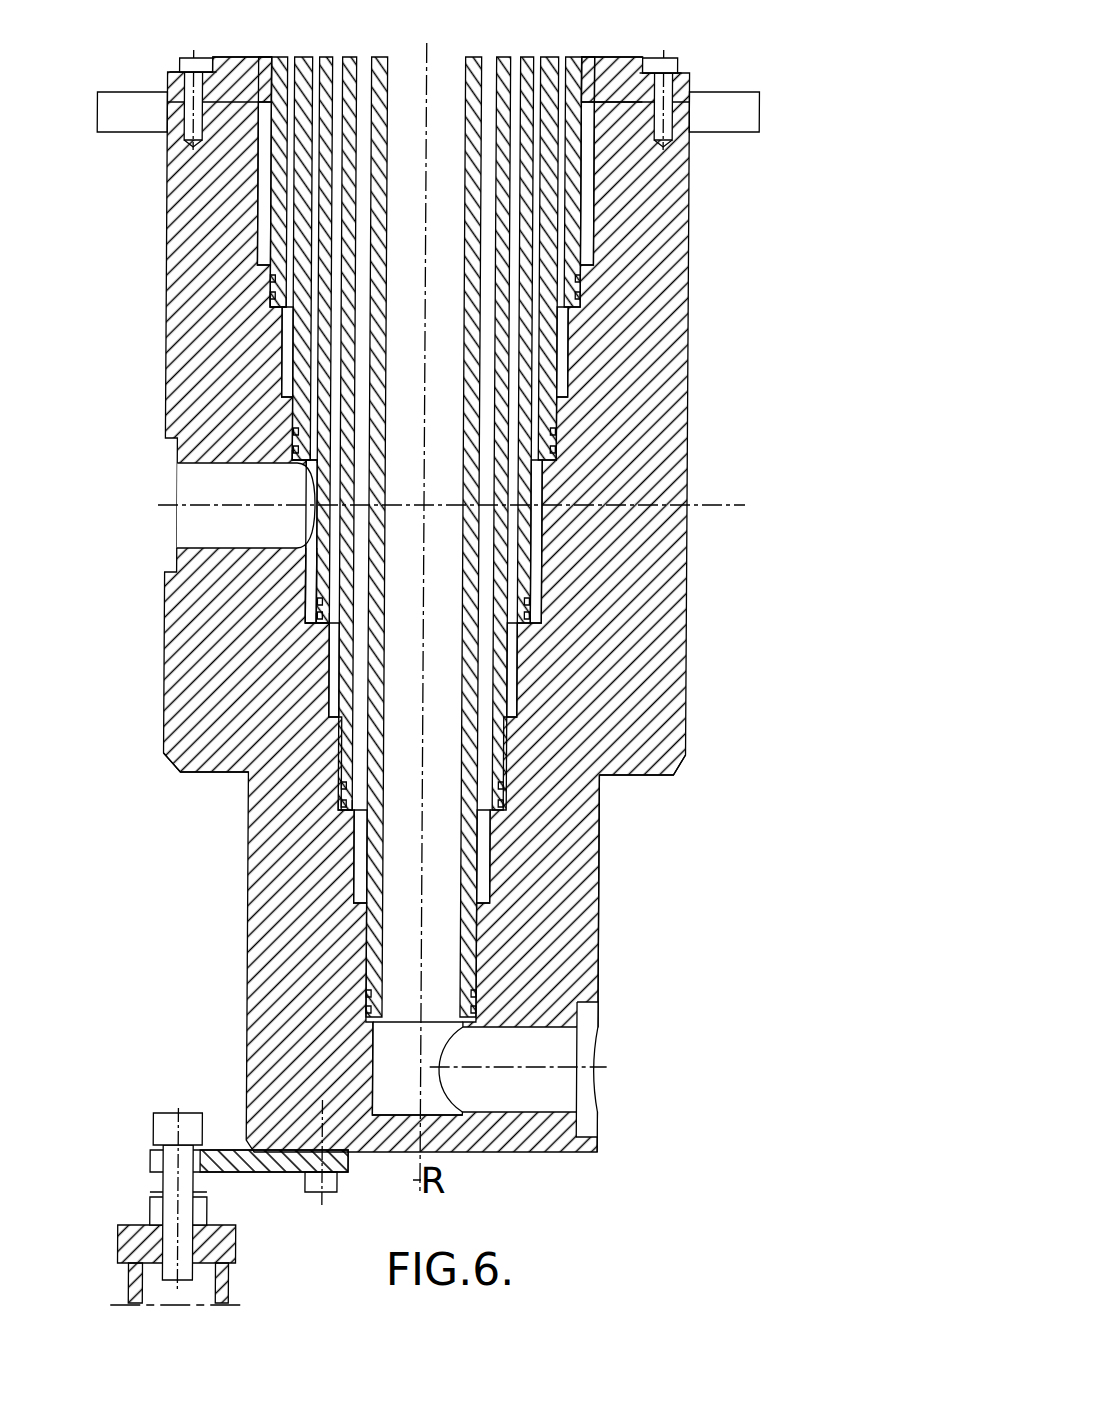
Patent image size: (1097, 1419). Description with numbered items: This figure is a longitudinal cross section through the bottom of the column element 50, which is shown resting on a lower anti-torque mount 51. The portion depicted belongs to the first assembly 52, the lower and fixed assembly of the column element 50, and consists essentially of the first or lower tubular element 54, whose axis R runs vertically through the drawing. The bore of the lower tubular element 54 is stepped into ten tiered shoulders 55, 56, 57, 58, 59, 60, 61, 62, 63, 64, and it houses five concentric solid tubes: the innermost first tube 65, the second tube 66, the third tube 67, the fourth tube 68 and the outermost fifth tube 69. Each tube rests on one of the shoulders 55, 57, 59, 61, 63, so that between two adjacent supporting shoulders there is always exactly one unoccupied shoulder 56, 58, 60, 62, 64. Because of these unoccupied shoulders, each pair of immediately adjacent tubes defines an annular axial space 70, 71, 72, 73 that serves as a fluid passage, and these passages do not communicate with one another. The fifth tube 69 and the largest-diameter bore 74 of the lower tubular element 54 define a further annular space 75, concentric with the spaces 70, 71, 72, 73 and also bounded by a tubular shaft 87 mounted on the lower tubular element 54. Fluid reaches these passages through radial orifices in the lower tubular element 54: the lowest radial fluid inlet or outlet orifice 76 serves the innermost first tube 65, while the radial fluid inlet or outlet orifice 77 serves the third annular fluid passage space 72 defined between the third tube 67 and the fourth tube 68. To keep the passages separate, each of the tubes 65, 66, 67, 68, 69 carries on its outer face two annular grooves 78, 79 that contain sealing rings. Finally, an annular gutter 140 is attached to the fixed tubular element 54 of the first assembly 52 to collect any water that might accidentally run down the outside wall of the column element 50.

The column element 50 is at (725, 895).
The lower anti-torque mount 51 is at (243, 1261).
The first assembly 52 is at (165, 763).
The first or lower tubular element 54 is at (640, 655).
The tiered shoulder 55 is at (379, 1027).
The tiered shoulder 56 is at (351, 912).
The tiered shoulder 57 is at (341, 825).
The tiered shoulder 58 is at (330, 721).
The tiered shoulder 59 is at (330, 625).
The tiered shoulder 60 is at (309, 558).
The tiered shoulder 61 is at (299, 467).
The tiered shoulder 62 is at (293, 411).
The tiered shoulder 63 is at (270, 318).
The tiered shoulder 64 is at (262, 275).
The first tube 65 is at (475, 107).
The second tube 66 is at (495, 70).
The third tube 67 is at (532, 72).
The fourth tube 68 is at (556, 72).
The fifth tube 69 is at (572, 78).
The annular axial space 70 is at (484, 855).
The annular axial space 71 is at (516, 680).
The third annular fluid passage space 72 is at (540, 487).
The annular axial space 73 is at (563, 350).
The largest-diameter bore 74 is at (597, 213).
The annular space 75 is at (588, 165).
The lowest radial fluid inlet or outlet orifice 76 is at (540, 1085).
The radial fluid inlet or outlet orifice 77 is at (215, 490).
The annular groove 78 is at (585, 278).
The annular groove 79 is at (584, 296).
The tubular shaft 87 is at (614, 82).
The annular gutter 140 is at (728, 116).